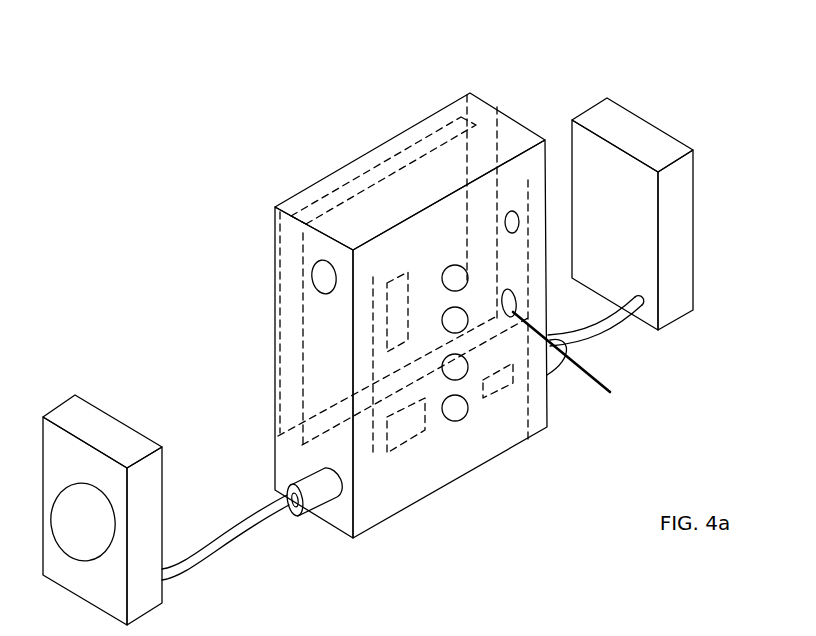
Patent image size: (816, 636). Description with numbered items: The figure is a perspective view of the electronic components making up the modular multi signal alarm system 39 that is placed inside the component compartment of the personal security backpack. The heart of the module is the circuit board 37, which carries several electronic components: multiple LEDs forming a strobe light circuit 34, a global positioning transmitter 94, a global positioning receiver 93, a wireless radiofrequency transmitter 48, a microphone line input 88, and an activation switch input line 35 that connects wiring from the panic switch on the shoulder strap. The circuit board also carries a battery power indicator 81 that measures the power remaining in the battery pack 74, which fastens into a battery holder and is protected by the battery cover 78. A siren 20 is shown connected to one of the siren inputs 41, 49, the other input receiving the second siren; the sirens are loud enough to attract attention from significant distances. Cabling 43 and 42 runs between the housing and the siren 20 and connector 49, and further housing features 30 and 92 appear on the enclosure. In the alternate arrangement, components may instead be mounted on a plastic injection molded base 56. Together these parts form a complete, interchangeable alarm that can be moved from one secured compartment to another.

The multi signal alarm system 39 is at (104, 135).
The battery pack 74 is at (353, 173).
The battery cover 78 is at (277, 203).
The side wall 30 is at (288, 312).
The activation switch input line 35 is at (310, 264).
The global positioning transmitter 94 is at (393, 330).
The partition 92 is at (455, 243).
The plastic injection molded base 56 is at (497, 105).
The battery power indicator 81 is at (511, 211).
The strobe light circuit 34 is at (465, 413).
The microphone line input 88 is at (568, 354).
The cable 43 is at (613, 337).
The siren input 41 is at (552, 375).
The siren 20 is at (688, 313).
The global positioning receiver 93 is at (507, 398).
The circuit board 37 is at (448, 448).
The wireless radiofrequency transmitter 48 is at (400, 448).
The siren input 49 is at (332, 485).
The cable 42 is at (247, 530).